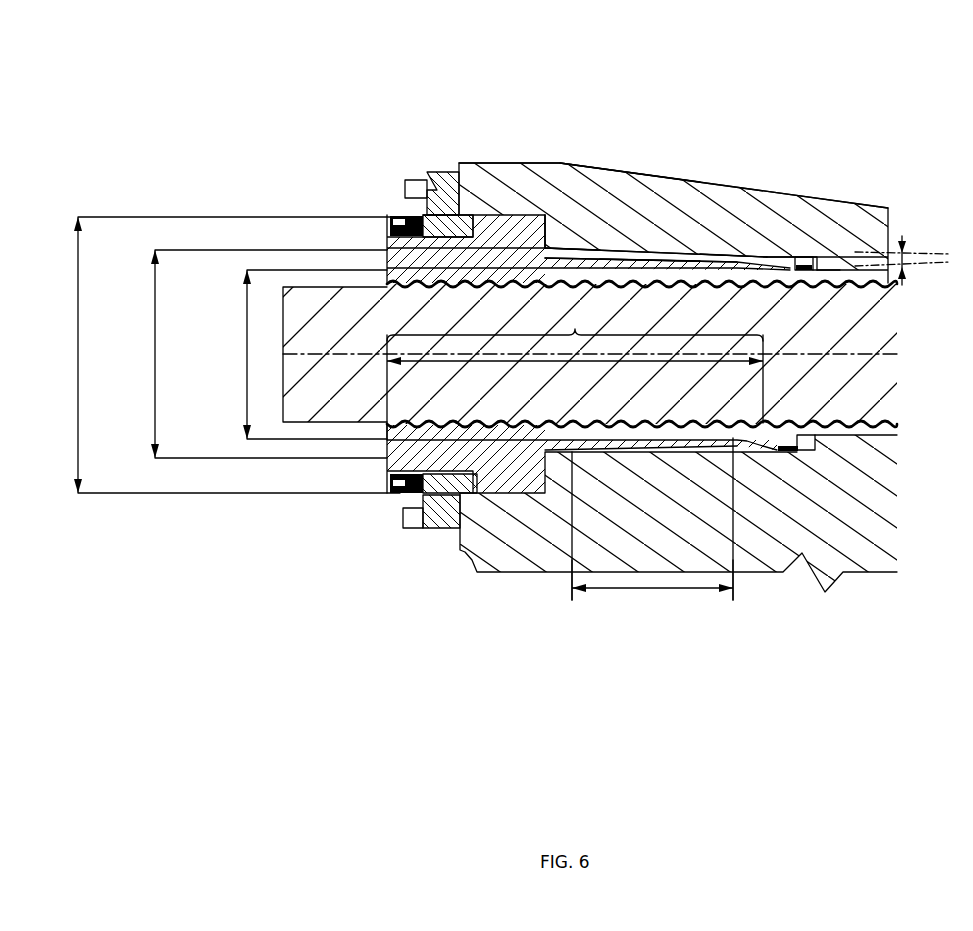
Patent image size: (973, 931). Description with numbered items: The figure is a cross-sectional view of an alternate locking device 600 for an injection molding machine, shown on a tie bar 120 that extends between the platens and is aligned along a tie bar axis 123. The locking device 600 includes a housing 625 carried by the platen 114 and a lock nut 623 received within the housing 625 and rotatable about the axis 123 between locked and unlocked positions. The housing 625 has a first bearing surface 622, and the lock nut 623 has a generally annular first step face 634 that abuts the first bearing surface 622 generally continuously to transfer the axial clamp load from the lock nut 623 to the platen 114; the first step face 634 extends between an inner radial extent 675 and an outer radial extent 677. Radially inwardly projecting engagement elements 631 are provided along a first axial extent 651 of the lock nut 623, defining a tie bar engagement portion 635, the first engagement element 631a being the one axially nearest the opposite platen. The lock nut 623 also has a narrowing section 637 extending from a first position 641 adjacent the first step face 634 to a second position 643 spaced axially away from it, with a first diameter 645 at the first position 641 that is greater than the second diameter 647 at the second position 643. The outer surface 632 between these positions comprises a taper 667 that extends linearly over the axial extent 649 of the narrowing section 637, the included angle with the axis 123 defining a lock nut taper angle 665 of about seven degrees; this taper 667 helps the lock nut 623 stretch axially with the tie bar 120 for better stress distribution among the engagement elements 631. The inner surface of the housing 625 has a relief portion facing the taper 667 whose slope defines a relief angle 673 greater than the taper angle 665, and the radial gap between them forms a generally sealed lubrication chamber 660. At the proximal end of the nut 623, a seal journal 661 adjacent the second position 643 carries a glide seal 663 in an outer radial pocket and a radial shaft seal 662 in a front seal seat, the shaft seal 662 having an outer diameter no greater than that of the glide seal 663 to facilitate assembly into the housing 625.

The locking device 600 is at (780, 66).
The first platen 114 is at (875, 496).
The tie bar 120 is at (877, 318).
The tie bar axis 123 is at (878, 352).
The first bearing surface 622 is at (565, 230).
The lock nut 623 is at (390, 230).
The housing 625 is at (487, 170).
The radially inwardly projecting engagement elements 631 is at (508, 430).
The first radially inwardly projecting engagement element 631a is at (790, 420).
The outer surface 632 is at (605, 248).
The first step face 634 is at (523, 211).
The tie bar engagement portion 635 is at (575, 324).
The narrowing section 637 is at (657, 252).
The first position 641 is at (570, 582).
The second position 643 is at (735, 581).
The first diameter 645 is at (155, 334).
The second diameter 647 is at (247, 358).
The axial extent of the narrowing section 649 is at (652, 589).
The first axial extent 651 is at (487, 361).
The lubrication chamber 660 is at (722, 252).
The seal journal 661 is at (801, 240).
The radial shaft seal 662 is at (828, 259).
The glide seal 663 is at (737, 254).
The lock nut taper angle 665 is at (593, 261).
The taper 667 is at (650, 260).
The relief angle 673 is at (902, 240).
The inner radial extent 675 is at (612, 249).
The outer radial extent 677 is at (78, 366).